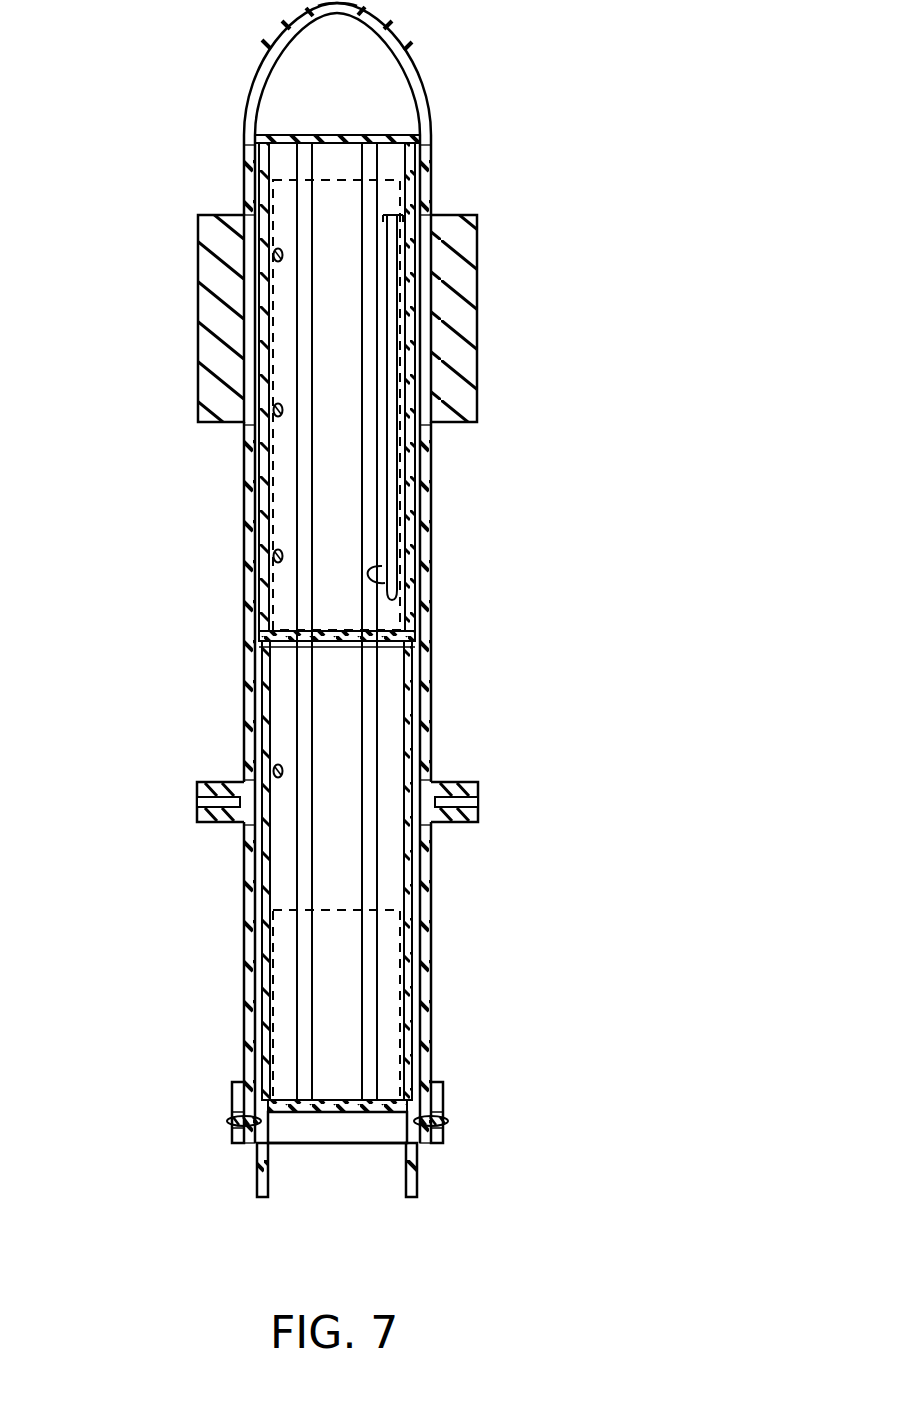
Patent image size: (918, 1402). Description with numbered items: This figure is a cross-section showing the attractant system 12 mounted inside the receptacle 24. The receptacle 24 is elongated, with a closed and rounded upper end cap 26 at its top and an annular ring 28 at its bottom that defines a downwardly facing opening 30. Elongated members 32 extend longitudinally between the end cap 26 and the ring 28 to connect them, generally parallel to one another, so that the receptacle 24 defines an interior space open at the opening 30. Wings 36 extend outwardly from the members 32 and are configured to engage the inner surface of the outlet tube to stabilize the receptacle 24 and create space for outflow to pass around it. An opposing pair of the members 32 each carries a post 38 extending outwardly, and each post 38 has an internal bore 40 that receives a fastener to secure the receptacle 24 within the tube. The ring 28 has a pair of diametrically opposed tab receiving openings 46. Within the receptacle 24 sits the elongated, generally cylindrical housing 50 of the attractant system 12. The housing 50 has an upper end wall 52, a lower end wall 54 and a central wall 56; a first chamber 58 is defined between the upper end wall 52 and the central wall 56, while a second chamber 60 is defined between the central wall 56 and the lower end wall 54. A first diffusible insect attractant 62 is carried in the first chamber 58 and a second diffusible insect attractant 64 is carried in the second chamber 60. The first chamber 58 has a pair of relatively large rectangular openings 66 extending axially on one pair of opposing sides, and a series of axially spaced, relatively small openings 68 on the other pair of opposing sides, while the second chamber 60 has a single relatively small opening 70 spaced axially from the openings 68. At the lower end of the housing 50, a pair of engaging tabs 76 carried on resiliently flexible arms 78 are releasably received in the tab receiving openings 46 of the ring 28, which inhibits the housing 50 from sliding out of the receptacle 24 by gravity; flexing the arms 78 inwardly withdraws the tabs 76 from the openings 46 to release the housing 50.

The attractant system 12 is at (528, 128).
The receptacle 24 is at (250, 106).
The upper end cap 26 is at (396, 38).
The annular ring 28 is at (340, 1130).
The downwardly facing opening 30 is at (367, 1146).
The elongated members 32 is at (250, 893).
The wings 36 is at (205, 320).
The post 38 is at (213, 787).
The internal bore 40 is at (205, 807).
The tab receiving openings 46 is at (232, 1117).
The housing 50 is at (410, 518).
The upper end wall 52 is at (355, 134).
The lower end wall 54 is at (310, 1106).
The central wall 56 is at (342, 643).
The first chamber 58 is at (355, 448).
The second chamber 60 is at (352, 745).
The first diffusible insect attractant 62 is at (433, 182).
The second diffusible insect attractant 64 is at (385, 997).
The rectangular openings 66 is at (375, 575).
The small openings 68 is at (284, 556).
The small opening 70 is at (284, 772).
The engaging tabs 76 is at (255, 1130).
The resiliently flexible arms 78 is at (258, 1182).